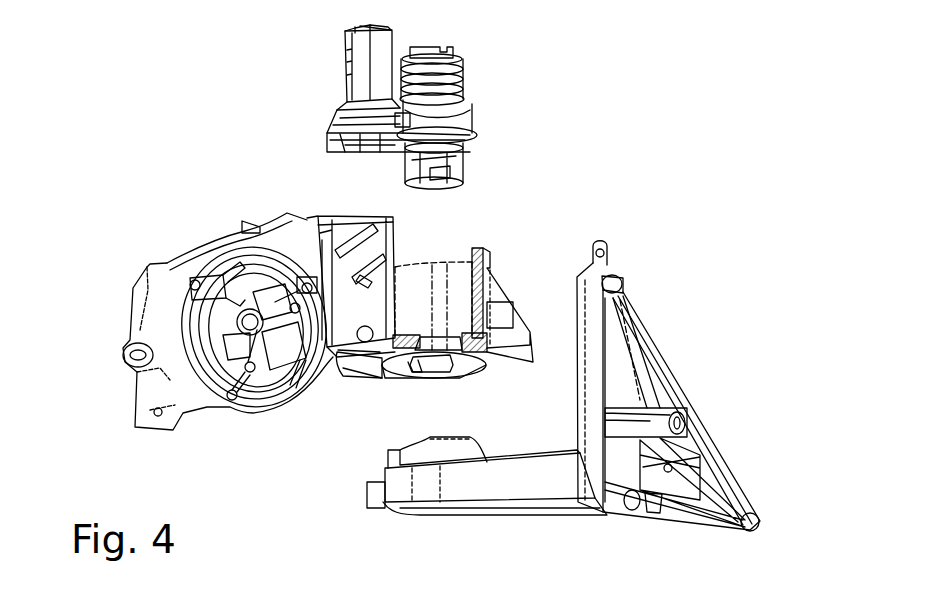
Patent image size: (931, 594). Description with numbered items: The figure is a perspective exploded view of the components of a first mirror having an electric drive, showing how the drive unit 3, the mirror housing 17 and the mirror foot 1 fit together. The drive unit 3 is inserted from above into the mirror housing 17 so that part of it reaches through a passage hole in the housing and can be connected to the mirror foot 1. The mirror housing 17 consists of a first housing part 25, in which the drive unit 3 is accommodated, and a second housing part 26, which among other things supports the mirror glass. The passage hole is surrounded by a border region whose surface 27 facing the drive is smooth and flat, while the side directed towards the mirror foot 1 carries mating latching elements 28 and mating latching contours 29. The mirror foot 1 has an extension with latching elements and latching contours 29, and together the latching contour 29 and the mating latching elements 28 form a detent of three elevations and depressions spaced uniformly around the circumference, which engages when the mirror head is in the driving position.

The mirror foot 1 is at (615, 340).
The drive unit 3 is at (486, 67).
The mirror housing 17 is at (217, 209).
The first housing part 25 is at (486, 256).
The second housing part 26 is at (175, 380).
The surface 27 is at (411, 328).
The mating latching elements 28 is at (410, 360).
The latching contours 29 is at (451, 444).